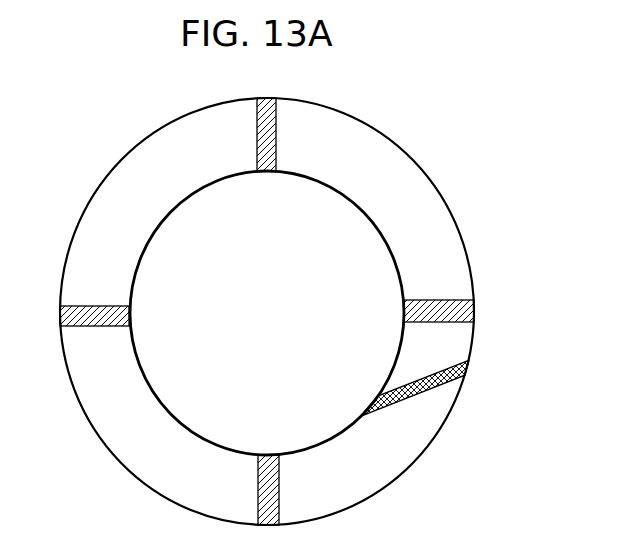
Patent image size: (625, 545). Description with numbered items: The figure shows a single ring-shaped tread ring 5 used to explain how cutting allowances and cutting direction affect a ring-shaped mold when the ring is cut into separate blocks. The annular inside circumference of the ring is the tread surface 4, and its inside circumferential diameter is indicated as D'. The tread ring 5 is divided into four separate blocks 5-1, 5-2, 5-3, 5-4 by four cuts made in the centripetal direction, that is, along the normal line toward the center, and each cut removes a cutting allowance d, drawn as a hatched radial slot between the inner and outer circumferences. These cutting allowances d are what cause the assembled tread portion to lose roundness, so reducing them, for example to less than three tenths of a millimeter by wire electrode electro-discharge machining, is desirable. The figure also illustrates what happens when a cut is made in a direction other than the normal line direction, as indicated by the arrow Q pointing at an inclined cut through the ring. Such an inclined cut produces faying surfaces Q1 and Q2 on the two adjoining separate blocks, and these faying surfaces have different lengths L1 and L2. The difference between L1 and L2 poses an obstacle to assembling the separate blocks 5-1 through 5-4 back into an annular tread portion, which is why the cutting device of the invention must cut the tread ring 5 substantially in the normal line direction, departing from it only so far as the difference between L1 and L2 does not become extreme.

The tread ring 5 is at (447, 173).
The separate block 5-1 is at (397, 142).
The separate block 5-2 is at (417, 464).
The separate block 5-3 is at (112, 458).
The separate block 5-4 is at (125, 152).
The tread surface 4 is at (343, 196).
The cutting direction arrow Q is at (474, 364).
The faying surface Q1 is at (400, 386).
The faying surface Q2 is at (446, 390).
The length of faying surface L1 is at (470, 345).
The length of faying surface L2 is at (477, 400).
The cutting allowance d is at (298, 193).
The annular inside circumferential diameter D' is at (268, 312).